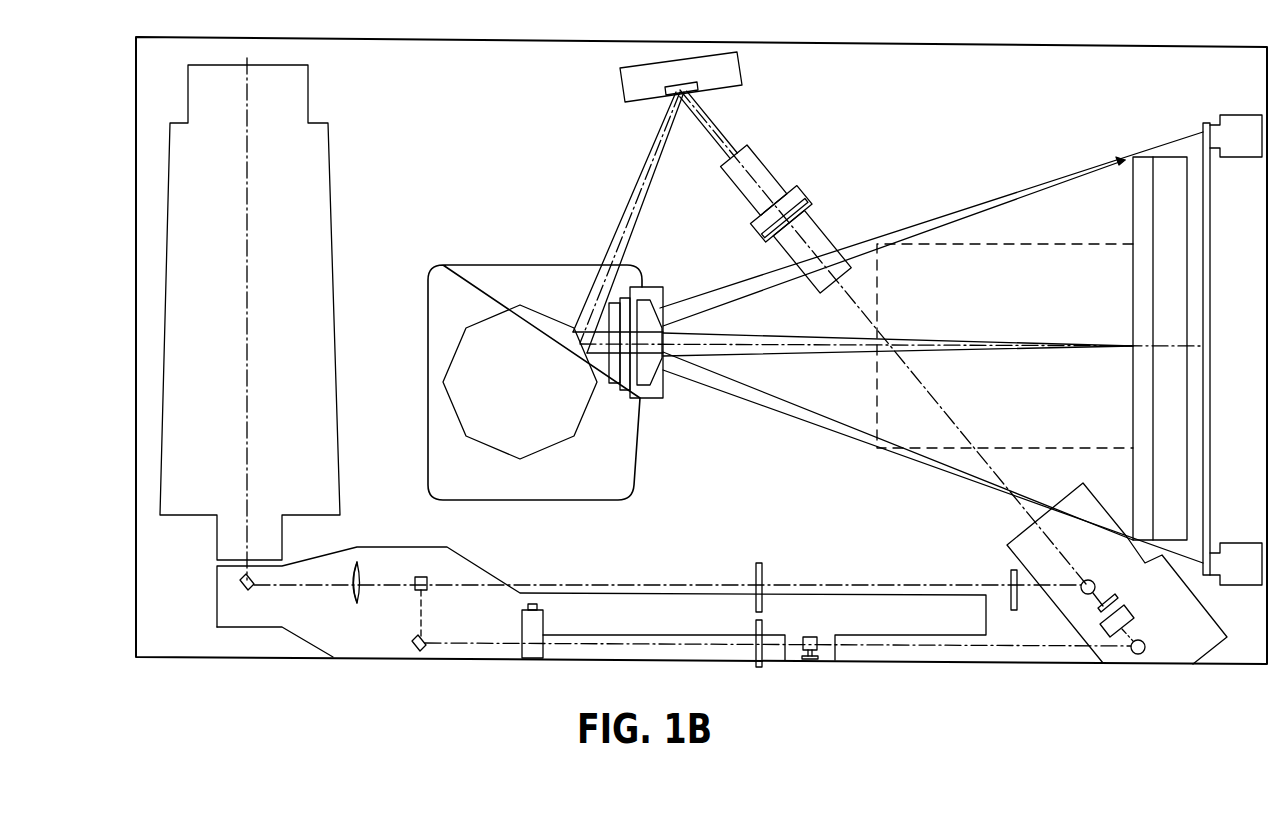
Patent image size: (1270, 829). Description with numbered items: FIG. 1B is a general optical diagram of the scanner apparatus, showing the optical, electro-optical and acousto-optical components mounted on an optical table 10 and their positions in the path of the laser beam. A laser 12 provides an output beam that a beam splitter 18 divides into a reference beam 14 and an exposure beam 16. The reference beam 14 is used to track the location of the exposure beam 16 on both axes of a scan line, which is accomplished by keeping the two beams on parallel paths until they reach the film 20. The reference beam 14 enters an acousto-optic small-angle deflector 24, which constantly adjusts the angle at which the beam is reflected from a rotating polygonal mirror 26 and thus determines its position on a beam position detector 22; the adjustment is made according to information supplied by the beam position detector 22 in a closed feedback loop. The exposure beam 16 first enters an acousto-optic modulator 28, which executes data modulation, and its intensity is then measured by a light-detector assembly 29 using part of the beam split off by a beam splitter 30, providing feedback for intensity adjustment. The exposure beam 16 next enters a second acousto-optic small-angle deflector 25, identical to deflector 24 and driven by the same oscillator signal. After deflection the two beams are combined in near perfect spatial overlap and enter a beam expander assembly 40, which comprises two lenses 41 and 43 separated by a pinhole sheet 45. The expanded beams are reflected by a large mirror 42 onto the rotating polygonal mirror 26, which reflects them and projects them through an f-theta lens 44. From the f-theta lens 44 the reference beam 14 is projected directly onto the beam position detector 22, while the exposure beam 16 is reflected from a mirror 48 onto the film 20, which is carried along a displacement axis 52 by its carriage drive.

The optical table 10 is at (195, 623).
The laser 12 is at (313, 175).
The reference beam 14 is at (962, 585).
The exposure beam 16 is at (987, 645).
The beam splitter 18 is at (420, 595).
The film 20 is at (1015, 243).
The beam position detector 22 is at (1202, 123).
The acousto-optic small-angle deflector 24 is at (1082, 593).
The acousto-optic small-angle deflector 25 is at (1143, 654).
The rotating polygonal mirror 26 is at (495, 318).
The acousto-optic modulator 28 is at (533, 652).
The light-detector assembly 29 is at (760, 667).
The beam splitter 30 is at (817, 650).
The beam expander assembly 40 is at (823, 250).
The lens 41 is at (1098, 617).
The large mirror 42 is at (703, 90).
The lens 43 is at (803, 195).
The f-theta lens 44 is at (653, 385).
The pinhole sheet 45 is at (1017, 537).
The mirror 48 is at (1125, 158).
The displacement axis 52 is at (830, 348).